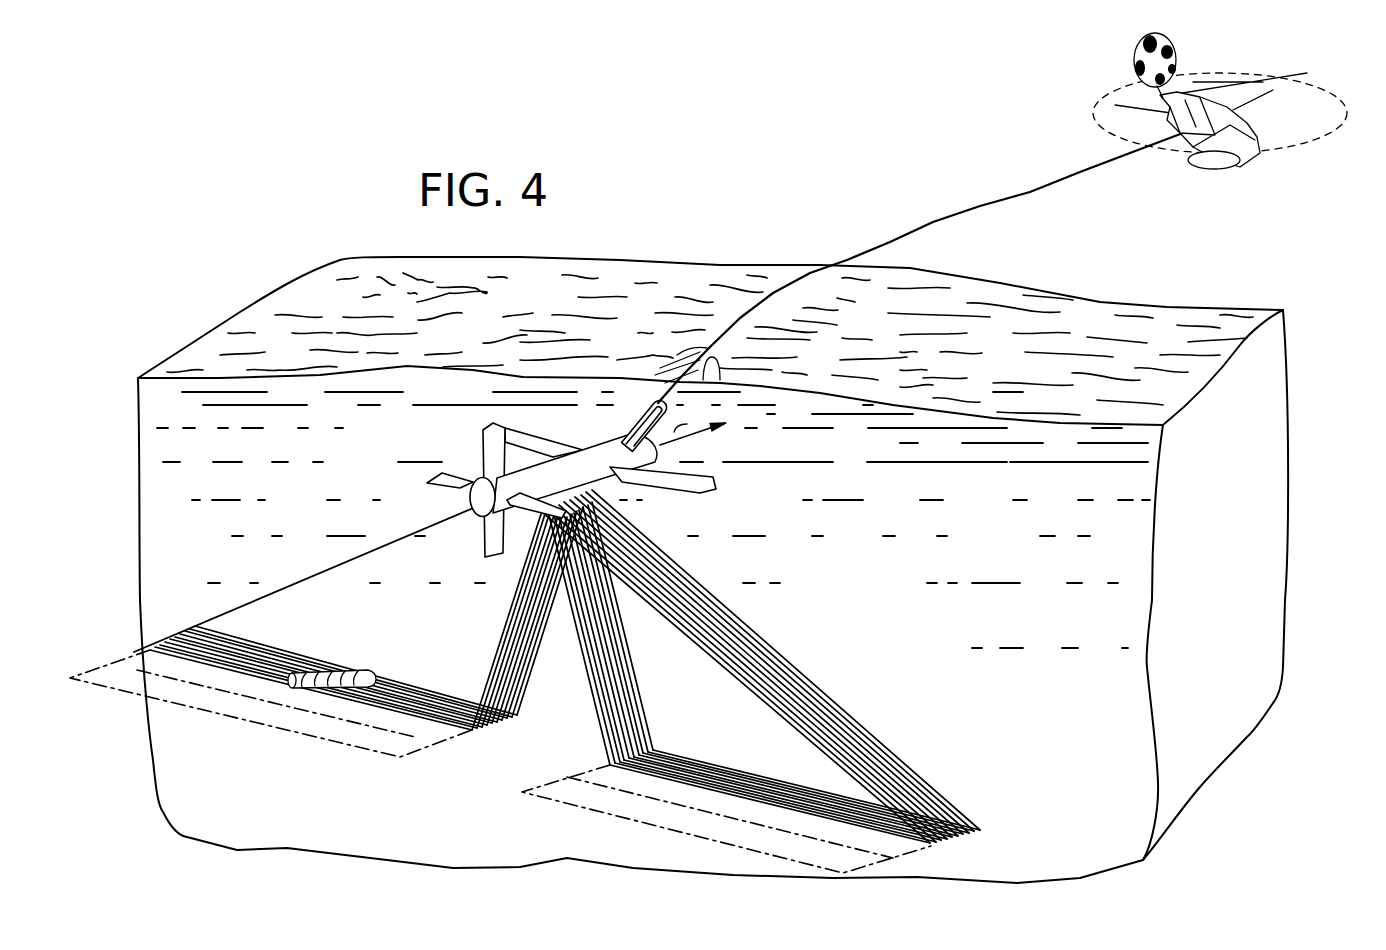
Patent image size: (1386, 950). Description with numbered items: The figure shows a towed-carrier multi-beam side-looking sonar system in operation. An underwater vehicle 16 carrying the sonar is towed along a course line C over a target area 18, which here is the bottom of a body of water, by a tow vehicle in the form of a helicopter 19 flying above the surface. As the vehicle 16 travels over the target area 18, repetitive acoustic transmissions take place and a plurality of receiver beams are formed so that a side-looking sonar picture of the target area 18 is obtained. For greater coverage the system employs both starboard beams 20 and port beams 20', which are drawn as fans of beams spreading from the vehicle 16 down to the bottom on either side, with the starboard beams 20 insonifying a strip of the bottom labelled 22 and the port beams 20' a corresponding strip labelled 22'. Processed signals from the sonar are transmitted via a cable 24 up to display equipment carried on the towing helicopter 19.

The underwater vehicle 16 is at (571, 438).
The target area 18 is at (500, 789).
The helicopter 19 is at (1218, 152).
The starboard beams 20 is at (769, 680).
The port beams 20' is at (328, 664).
The swath track outline 22 is at (739, 834).
The previous swath track outline 22' is at (271, 716).
The cable 24 is at (1030, 192).